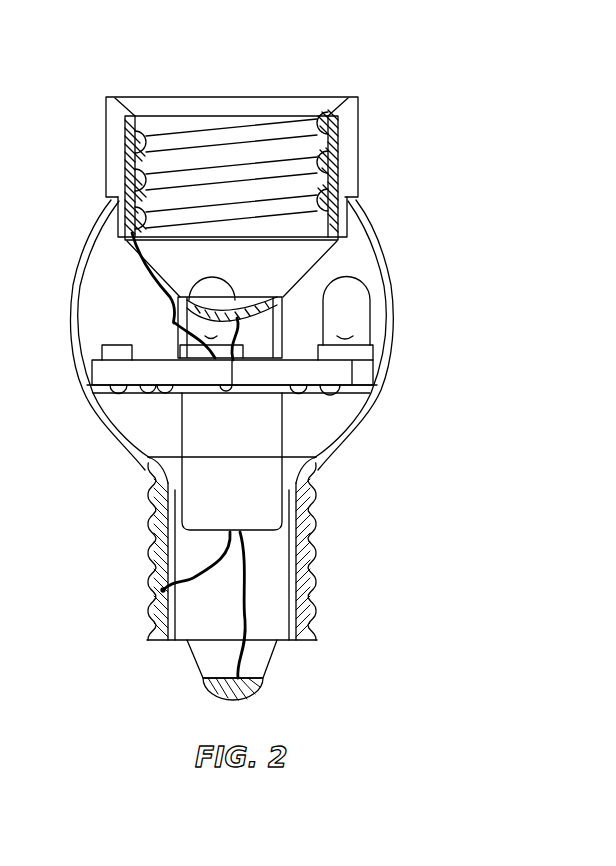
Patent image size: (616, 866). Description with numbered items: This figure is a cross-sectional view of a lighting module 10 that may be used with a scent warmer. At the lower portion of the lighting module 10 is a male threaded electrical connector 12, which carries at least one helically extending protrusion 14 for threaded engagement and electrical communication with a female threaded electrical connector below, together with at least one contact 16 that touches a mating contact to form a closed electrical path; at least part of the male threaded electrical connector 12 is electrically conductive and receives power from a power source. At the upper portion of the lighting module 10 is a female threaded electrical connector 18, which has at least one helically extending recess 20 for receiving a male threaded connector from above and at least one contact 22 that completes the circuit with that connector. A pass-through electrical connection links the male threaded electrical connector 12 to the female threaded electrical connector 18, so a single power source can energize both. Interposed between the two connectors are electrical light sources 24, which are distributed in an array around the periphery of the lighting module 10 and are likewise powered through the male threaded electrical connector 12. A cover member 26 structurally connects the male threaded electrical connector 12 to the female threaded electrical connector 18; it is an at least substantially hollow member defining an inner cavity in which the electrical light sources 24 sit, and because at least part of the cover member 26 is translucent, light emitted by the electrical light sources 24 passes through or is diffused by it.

The lighting module 10 is at (405, 56).
The male threaded electrical connector 12 is at (0, 28).
The helically extending protrusion 14 is at (0, 107).
The contact 16 is at (217, 692).
The female threaded electrical connector 18 is at (383, 157).
The helically extending recess 20 is at (153, 162).
The contact 22 is at (215, 327).
The electrical light source 24 is at (260, 305).
The cover member 26 is at (77, 303).